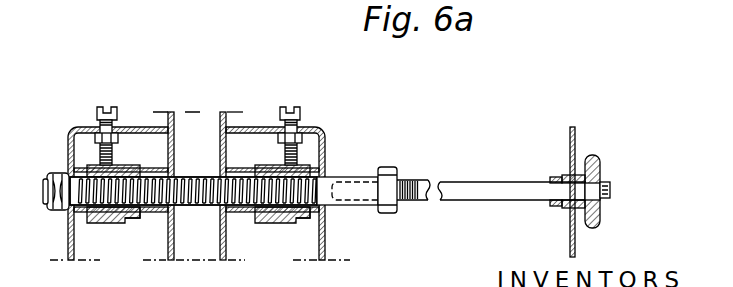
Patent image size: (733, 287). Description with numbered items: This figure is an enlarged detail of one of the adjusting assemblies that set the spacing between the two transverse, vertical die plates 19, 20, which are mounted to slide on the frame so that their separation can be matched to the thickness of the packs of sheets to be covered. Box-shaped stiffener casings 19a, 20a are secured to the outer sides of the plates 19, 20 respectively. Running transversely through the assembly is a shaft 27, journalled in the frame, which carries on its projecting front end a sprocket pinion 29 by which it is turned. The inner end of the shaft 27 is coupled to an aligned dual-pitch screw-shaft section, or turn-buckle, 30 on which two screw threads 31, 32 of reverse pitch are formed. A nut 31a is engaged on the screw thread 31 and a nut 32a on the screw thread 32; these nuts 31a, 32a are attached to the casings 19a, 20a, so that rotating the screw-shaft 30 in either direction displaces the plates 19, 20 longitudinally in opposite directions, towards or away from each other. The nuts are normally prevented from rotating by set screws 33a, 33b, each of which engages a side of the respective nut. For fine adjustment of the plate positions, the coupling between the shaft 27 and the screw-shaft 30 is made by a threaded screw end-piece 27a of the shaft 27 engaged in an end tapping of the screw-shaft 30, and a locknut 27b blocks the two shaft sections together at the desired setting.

The vertical plate 19 is at (173, 112).
The box-shaped stiffener casing 19a is at (68, 226).
The vertical plate 20 is at (217, 113).
The box-shaped stiffener casing 20a is at (330, 236).
The shaft 27 is at (452, 185).
The screw end-piece 27a is at (404, 181).
The locknut 27b is at (393, 213).
The sprocket pinion 29 is at (596, 160).
The screw-shaft section 30 is at (327, 193).
The screw thread 31 is at (108, 225).
The nut 31a is at (134, 222).
The screw thread 32 is at (277, 225).
The nut 32a is at (302, 222).
The set screw 33a is at (100, 125).
The set screw 33b is at (300, 121).